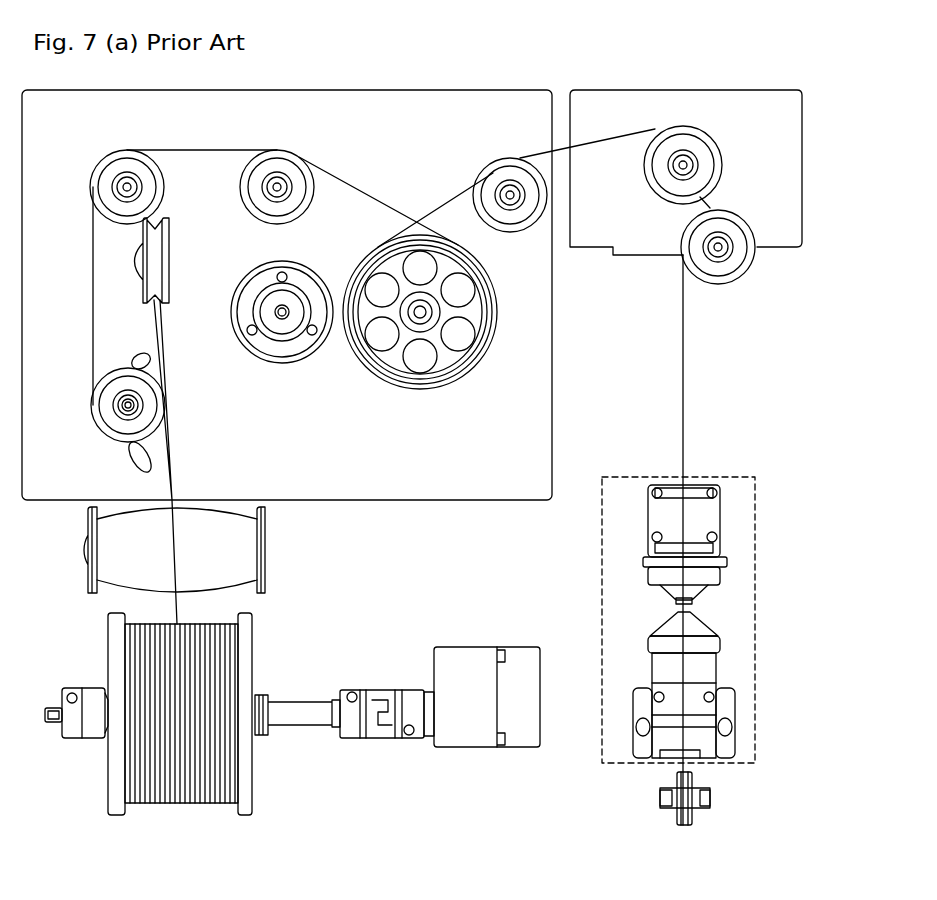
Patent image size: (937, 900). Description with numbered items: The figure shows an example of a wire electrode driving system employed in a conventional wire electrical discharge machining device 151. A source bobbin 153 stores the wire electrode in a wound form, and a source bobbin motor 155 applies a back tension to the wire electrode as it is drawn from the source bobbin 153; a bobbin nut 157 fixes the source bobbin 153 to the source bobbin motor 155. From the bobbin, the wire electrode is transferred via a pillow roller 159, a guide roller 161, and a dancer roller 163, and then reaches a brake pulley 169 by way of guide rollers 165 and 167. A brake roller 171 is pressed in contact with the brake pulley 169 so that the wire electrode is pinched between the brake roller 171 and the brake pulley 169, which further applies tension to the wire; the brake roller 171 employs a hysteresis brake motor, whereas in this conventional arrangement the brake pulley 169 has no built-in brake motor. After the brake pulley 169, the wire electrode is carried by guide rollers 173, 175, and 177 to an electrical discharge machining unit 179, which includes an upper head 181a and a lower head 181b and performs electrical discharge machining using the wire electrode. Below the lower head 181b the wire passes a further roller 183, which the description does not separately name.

The wire electrical discharge machining device 151 is at (718, 52).
The source bobbin 153 is at (250, 770).
The source bobbin motor 155 is at (457, 748).
The bobbin nut 157 is at (67, 738).
The pillow roller 159 is at (265, 545).
The guide roller 161 is at (172, 258).
The dancer roller 163 is at (92, 415).
The guide roller 165 is at (92, 180).
The guide roller 167 is at (293, 153).
The brake pulley 169 is at (437, 391).
The brake roller 171 is at (265, 358).
The guide roller 173 is at (485, 168).
The guide roller 175 is at (705, 131).
The guide roller 177 is at (752, 262).
The electrical discharge machining unit 179 is at (710, 475).
The upper head 181a is at (720, 530).
The lower head 181b is at (715, 663).
The outlet guide roller 183 is at (695, 778).